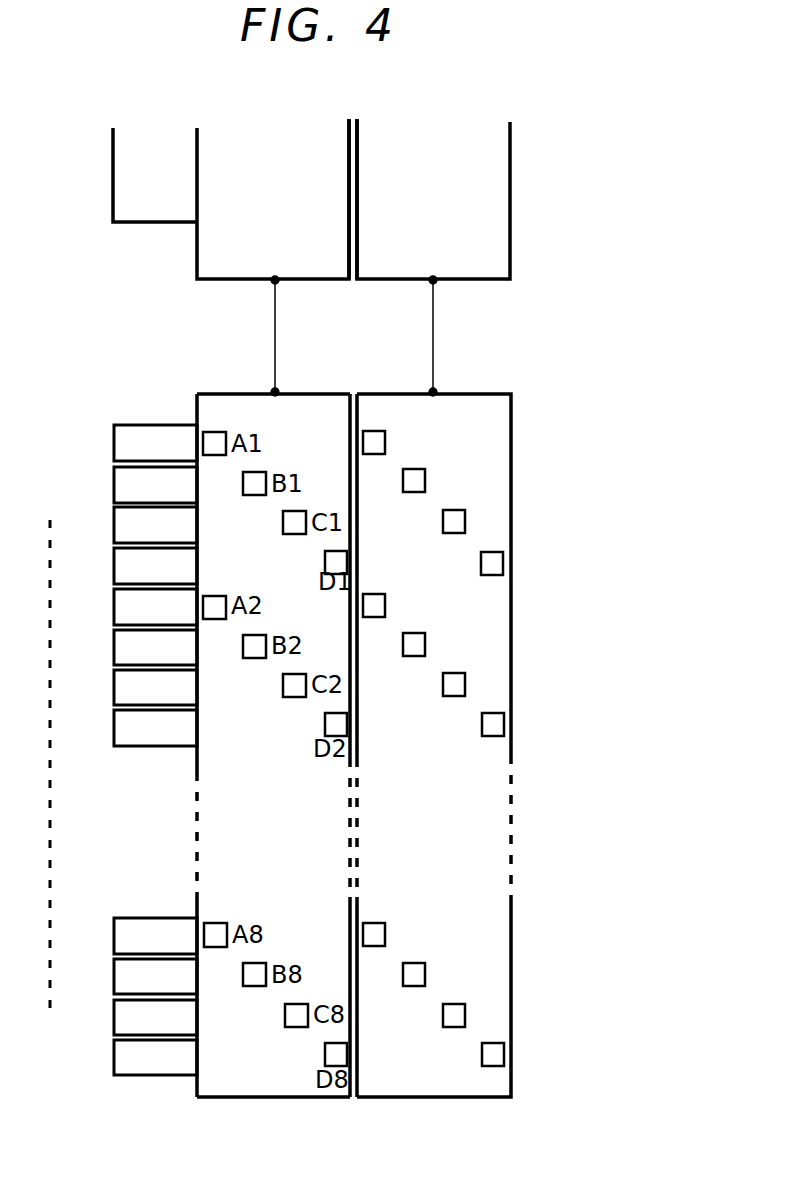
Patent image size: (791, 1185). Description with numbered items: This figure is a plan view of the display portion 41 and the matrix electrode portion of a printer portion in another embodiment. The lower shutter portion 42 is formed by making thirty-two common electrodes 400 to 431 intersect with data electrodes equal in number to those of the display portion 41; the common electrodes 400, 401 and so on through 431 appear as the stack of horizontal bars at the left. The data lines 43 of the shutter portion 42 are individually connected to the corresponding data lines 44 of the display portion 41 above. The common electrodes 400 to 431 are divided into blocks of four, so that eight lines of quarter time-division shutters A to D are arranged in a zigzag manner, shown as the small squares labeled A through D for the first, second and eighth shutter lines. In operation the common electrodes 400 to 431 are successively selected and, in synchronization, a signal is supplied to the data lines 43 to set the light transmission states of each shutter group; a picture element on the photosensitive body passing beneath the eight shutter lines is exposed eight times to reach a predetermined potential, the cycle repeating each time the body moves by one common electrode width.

The display portion 41 is at (490, 201).
The data lines of the display portion 44 is at (337, 281).
The shutter portion 42 is at (512, 655).
The data lines 43 is at (335, 1100).
The common electrode 400 is at (113, 445).
The common electrode 401 is at (113, 488).
The common electrode 431 is at (114, 1056).